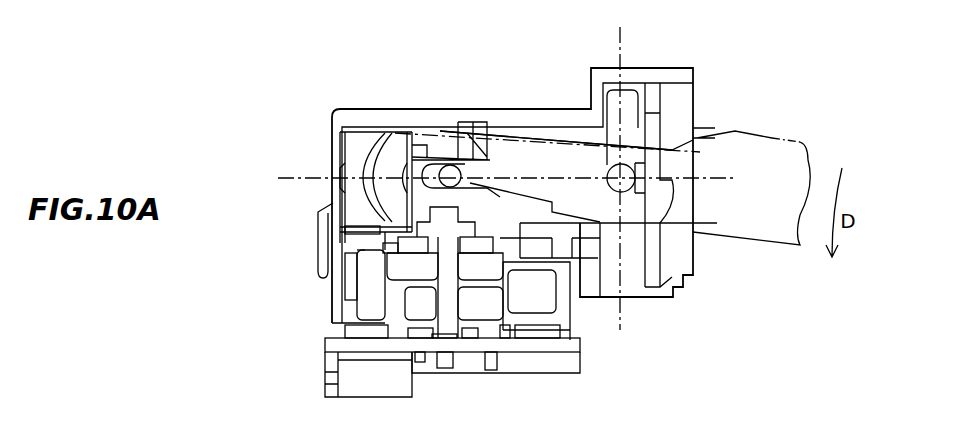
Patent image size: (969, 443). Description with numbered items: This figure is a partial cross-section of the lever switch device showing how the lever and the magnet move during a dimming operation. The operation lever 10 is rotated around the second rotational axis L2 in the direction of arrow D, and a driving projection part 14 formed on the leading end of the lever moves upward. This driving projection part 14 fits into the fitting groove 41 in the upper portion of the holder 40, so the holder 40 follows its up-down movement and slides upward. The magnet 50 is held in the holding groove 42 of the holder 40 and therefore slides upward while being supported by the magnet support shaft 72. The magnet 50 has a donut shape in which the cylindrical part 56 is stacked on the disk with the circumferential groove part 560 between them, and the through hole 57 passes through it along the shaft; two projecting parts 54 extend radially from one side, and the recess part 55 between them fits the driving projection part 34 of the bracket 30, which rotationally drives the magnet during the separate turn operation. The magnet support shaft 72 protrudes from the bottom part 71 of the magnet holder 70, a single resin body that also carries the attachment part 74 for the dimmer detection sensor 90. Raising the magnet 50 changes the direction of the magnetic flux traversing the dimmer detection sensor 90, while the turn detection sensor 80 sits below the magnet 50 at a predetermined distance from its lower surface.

The operation lever 10 is at (738, 130).
The driving projection part 14 is at (443, 173).
The bracket 30 is at (538, 138).
The driving projection part 34 is at (372, 302).
The holder 40 is at (457, 160).
The fitting groove 41 is at (422, 173).
The holding groove 42 is at (378, 231).
The magnet 50 is at (372, 290).
The projecting part 54 is at (348, 265).
The recess part 55 is at (385, 268).
The cylindrical part 56 is at (358, 222).
The circumferential groove part 560 is at (357, 251).
The through hole 57 is at (462, 253).
The magnet holder 70 is at (372, 337).
The bottom part 71 is at (418, 318).
The magnet support shaft 72 is at (448, 302).
The attachment part 74 is at (562, 317).
The turn detection sensor 80 is at (443, 338).
The dimmer detection sensor 90 is at (515, 302).
The second rotational axis L2 is at (622, 176).